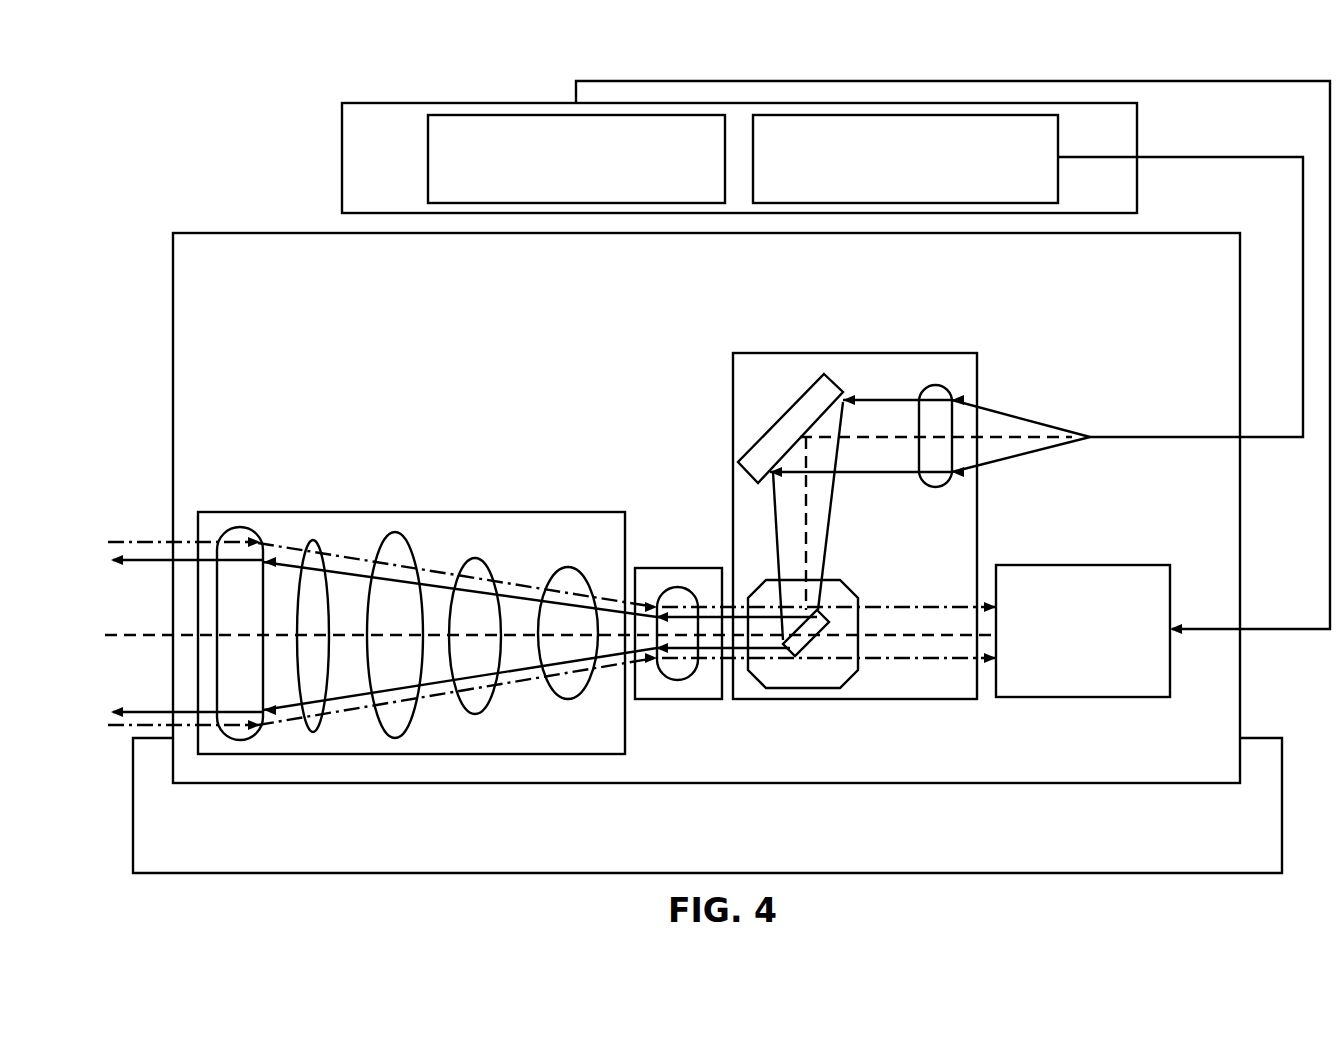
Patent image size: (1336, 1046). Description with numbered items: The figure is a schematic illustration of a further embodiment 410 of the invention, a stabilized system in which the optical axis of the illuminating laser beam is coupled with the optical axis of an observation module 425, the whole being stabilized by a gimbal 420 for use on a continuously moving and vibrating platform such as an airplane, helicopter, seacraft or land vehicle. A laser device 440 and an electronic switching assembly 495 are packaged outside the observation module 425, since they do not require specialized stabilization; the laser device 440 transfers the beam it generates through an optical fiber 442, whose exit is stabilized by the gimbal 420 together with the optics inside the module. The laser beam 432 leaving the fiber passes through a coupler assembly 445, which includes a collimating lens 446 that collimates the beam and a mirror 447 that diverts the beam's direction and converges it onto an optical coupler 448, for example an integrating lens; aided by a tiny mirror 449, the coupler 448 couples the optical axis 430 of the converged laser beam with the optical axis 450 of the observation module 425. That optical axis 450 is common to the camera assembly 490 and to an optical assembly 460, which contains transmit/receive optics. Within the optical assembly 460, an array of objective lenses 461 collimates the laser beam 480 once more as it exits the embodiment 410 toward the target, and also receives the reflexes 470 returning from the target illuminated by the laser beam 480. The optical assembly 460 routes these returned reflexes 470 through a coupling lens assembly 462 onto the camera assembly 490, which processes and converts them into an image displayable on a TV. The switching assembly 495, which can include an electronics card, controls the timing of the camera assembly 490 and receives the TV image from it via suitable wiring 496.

The stabilizing system embodiment 410 is at (278, 136).
The gimbal 420 is at (133, 855).
The observation module 425 is at (173, 320).
The optical axis of laser device 430 is at (865, 437).
The laser beam 432 is at (1068, 438).
The laser device 440 is at (1058, 173).
The optical fiber 442 is at (1303, 215).
The coupler assembly 445 is at (793, 353).
The collimating lens 446 is at (937, 385).
The mirror 447 is at (802, 393).
The optical coupler 448 is at (840, 583).
The tiny mirror 449 is at (805, 650).
The optical axis of observation module 450 is at (940, 637).
The optical assembly 460 is at (592, 512).
The array of objective lenses 461 is at (553, 575).
The coupling lens assembly 462 is at (695, 700).
The reflexes 470 is at (170, 728).
The laser beam 480 is at (127, 567).
The camera assembly 490 is at (1130, 698).
The electronic switching assembly 495 is at (428, 150).
The wiring 496 is at (1285, 630).